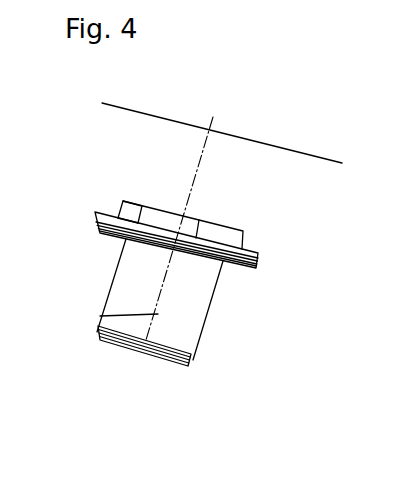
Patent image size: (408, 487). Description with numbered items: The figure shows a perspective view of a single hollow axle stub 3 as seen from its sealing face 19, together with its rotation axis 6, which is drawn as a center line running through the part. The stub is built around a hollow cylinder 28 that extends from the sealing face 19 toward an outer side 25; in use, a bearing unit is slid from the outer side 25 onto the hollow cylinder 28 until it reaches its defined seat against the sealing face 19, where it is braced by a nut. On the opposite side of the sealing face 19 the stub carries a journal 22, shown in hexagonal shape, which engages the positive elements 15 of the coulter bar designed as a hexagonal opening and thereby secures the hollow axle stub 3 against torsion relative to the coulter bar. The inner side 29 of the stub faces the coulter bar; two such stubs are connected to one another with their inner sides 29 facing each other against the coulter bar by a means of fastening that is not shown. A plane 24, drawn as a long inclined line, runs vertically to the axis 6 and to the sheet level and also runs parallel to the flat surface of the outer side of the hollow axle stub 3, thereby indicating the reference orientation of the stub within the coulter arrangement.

The hollow axle stub 3 is at (173, 279).
The rotation axis 6 is at (98, 320).
The positive elements 15 is at (243, 229).
The sealing face 19 is at (231, 272).
The journal 22 is at (223, 211).
The plane 24 is at (222, 112).
The outer side 25 is at (144, 375).
The hollow cylinder 28 is at (173, 326).
The inner side 29 is at (113, 183).